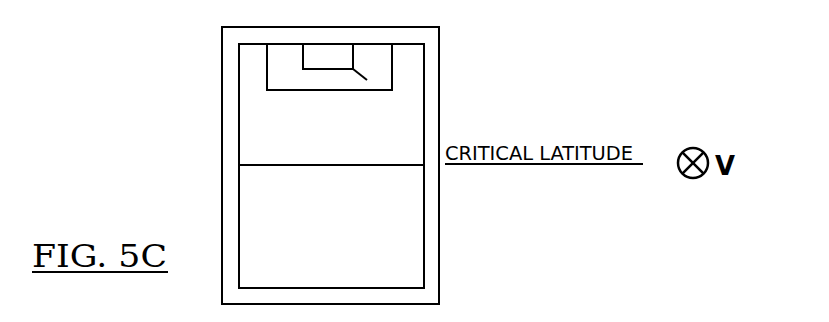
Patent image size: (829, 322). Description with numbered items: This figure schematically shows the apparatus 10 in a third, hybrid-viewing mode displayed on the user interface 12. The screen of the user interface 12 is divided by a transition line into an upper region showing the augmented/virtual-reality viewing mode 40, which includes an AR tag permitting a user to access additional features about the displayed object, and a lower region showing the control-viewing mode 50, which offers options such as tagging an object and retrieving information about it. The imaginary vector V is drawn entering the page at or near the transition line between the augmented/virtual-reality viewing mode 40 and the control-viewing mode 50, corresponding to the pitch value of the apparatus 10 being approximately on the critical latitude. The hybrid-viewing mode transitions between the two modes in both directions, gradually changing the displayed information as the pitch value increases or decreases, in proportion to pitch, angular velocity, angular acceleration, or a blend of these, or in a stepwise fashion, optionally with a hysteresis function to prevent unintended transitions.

The apparatus 10 is at (440, 72).
The user interface 12 is at (403, 228).
The augmented-reality viewing mode 40 is at (400, 155).
The control-viewing mode 50 is at (400, 205).